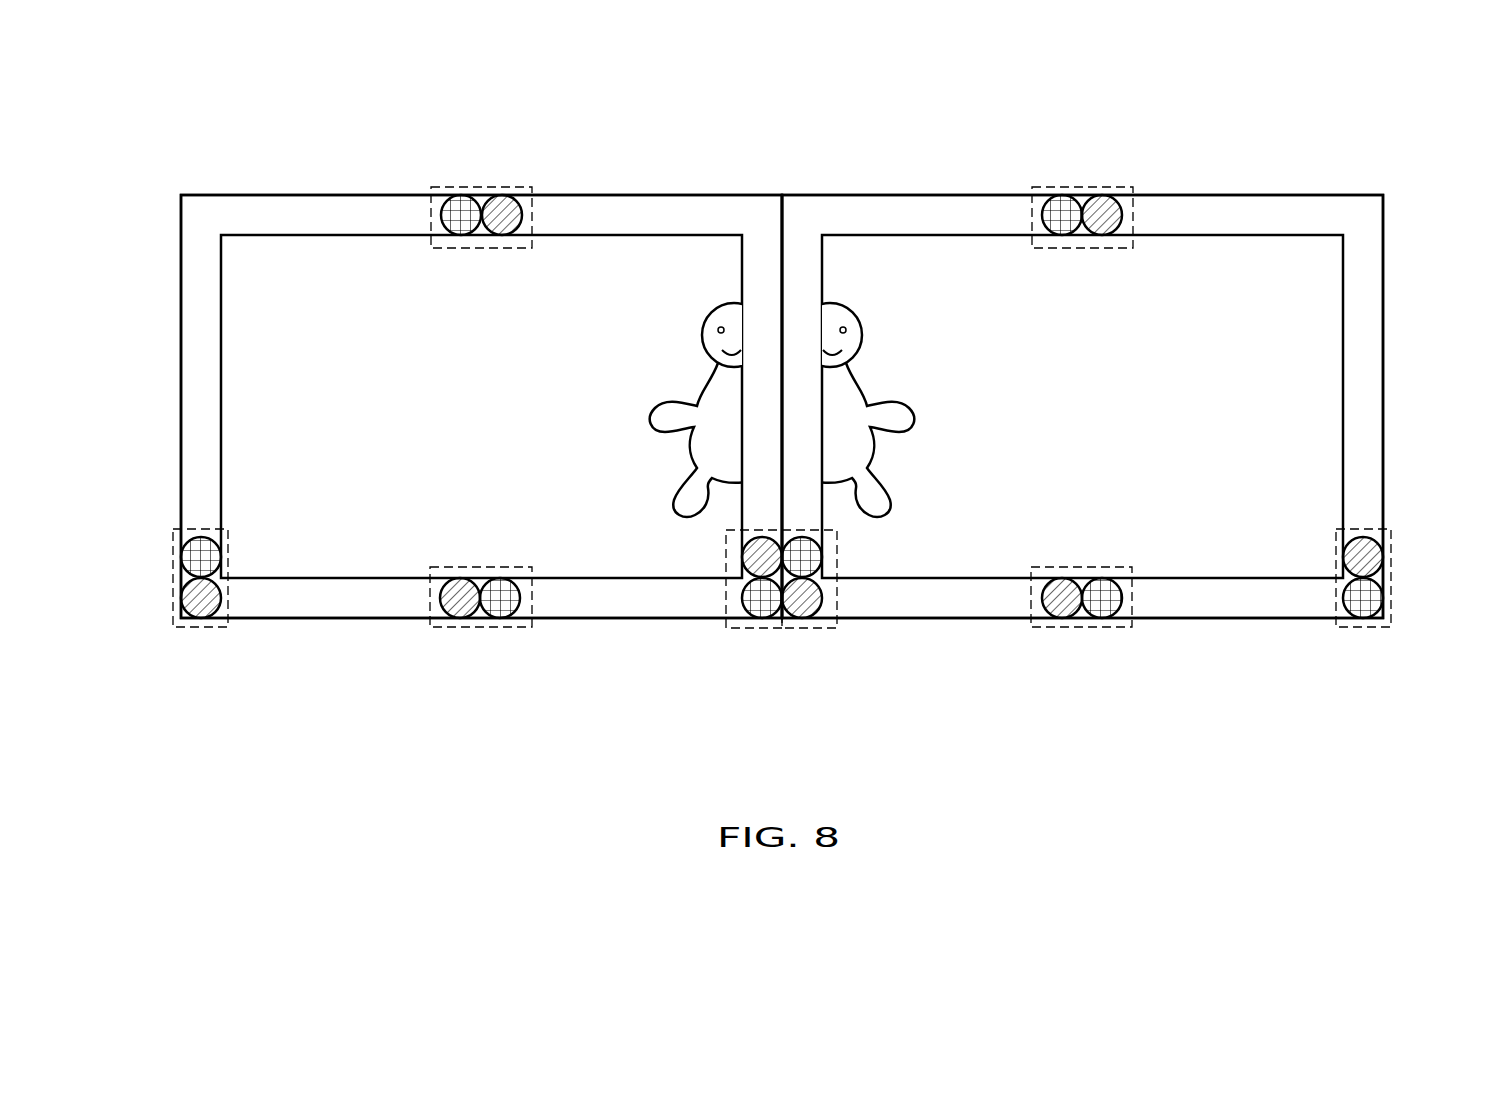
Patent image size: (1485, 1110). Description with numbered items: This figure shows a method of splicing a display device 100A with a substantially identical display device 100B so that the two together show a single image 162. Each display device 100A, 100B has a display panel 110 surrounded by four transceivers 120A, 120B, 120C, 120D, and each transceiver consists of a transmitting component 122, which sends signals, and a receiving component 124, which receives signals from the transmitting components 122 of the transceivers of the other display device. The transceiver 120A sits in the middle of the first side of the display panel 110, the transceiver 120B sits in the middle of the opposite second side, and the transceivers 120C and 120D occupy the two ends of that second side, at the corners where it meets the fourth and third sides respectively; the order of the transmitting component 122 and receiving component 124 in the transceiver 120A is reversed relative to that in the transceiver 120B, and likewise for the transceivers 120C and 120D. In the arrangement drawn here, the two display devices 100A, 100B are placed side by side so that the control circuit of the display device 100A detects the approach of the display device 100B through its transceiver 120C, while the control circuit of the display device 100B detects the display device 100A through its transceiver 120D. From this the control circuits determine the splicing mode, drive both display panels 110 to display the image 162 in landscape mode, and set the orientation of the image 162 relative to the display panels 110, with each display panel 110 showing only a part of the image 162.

The display device 100A is at (608, 128).
The display device 100B is at (1263, 128).
The display panel 110 is at (302, 307).
The transceiver 120A is at (432, 187).
The transceiver 120B is at (430, 627).
The transceiver 120C is at (726, 627).
The transceiver 120D is at (178, 529).
The transmitting component 122 is at (502, 205).
The receiving component 124 is at (461, 210).
The image 162 is at (702, 333).